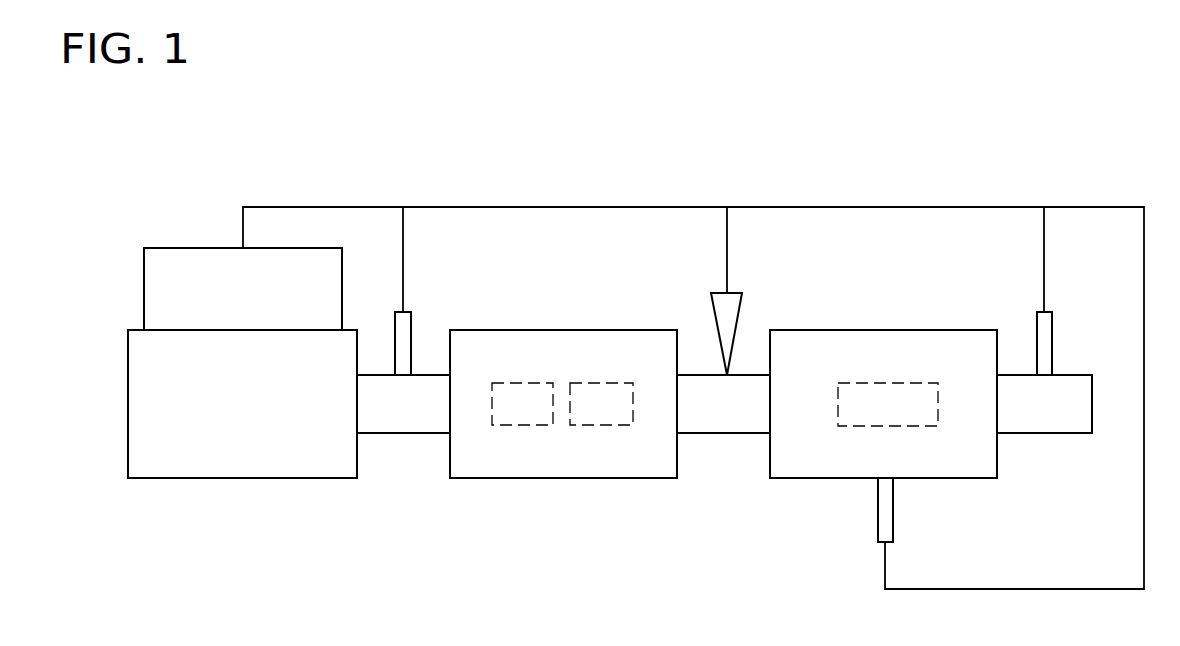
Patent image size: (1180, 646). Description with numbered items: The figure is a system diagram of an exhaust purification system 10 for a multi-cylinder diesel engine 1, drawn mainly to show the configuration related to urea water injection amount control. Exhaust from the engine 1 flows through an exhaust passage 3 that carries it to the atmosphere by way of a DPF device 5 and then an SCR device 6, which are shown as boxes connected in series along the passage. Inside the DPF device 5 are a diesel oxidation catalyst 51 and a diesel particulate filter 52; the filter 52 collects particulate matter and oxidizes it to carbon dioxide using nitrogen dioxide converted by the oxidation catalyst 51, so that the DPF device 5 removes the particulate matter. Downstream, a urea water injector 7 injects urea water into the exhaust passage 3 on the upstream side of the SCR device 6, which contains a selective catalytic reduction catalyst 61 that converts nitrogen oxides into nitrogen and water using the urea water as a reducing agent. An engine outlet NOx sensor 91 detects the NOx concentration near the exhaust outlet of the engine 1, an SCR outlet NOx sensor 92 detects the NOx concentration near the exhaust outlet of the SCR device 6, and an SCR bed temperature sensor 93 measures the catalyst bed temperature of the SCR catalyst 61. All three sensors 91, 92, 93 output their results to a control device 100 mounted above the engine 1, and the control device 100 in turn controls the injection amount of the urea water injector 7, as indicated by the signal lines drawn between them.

The engine 1 is at (263, 478).
The exhaust passage 3 is at (405, 435).
The DPF device 5 is at (565, 328).
The diesel oxidation catalyst 51 is at (523, 427).
The diesel particulate filter 52 is at (598, 427).
The SCR device 6 is at (883, 330).
The selective catalytic reduction catalyst 61 is at (905, 427).
The urea water injector 7 is at (733, 290).
The exhaust purification system 10 is at (913, 152).
The engine outlet NOx sensor 91 is at (410, 343).
The SCR outlet NOx sensor 92 is at (1053, 343).
The SCR bed temperature sensor 93 is at (877, 527).
The control device 100 is at (193, 247).